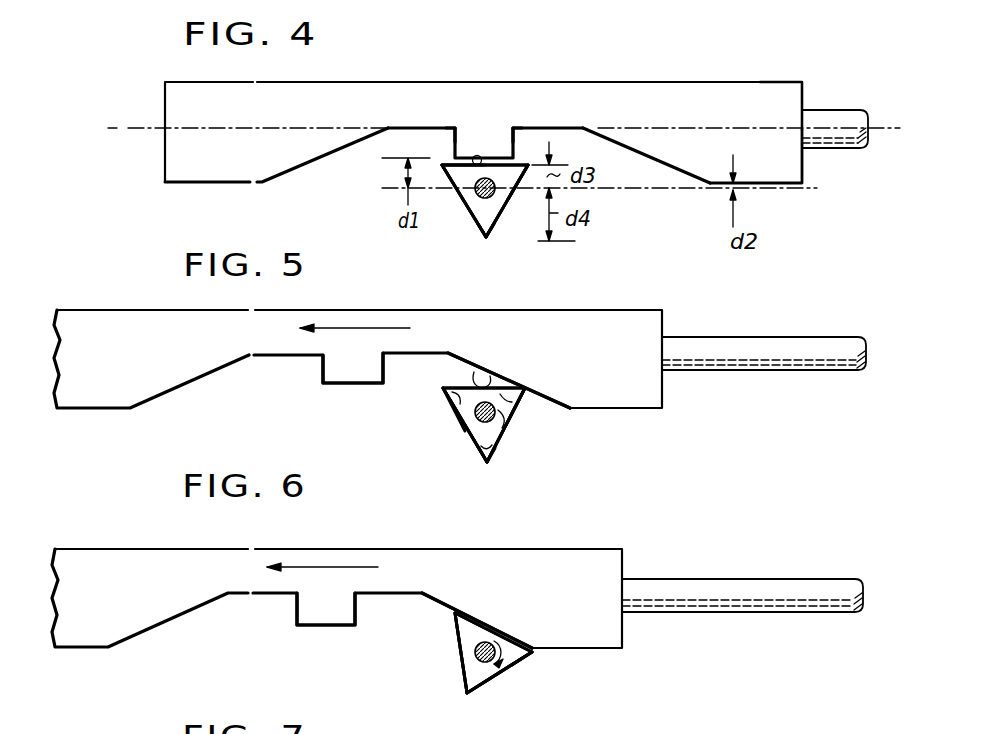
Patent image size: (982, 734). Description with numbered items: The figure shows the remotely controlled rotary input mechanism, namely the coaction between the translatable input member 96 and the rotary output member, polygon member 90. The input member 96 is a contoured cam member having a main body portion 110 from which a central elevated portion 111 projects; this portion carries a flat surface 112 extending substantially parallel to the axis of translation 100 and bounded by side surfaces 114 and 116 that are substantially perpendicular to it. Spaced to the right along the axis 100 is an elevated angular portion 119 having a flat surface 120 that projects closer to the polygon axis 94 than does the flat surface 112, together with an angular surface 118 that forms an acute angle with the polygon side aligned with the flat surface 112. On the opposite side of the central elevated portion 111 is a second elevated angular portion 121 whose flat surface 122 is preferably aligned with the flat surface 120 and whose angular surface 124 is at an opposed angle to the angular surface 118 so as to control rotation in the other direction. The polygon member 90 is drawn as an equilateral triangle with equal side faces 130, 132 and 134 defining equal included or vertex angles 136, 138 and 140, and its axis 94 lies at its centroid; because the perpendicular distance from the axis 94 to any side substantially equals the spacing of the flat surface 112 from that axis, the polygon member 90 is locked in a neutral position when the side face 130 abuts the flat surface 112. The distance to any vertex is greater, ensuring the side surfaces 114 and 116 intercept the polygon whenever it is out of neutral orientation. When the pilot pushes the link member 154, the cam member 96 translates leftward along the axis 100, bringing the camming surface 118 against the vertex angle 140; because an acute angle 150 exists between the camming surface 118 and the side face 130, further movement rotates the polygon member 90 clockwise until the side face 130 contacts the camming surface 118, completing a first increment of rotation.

In FIG. 4, the polygon member 90 is at (483, 212).
In FIG. 5, the polygon member 90 is at (477, 430).
In FIG. 6, the polygon member 90 is at (465, 628).
In FIG. 4, the polygon axis 94 is at (476, 190).
In FIG. 5, the polygon axis 94 is at (477, 415).
In FIG. 6, the polygon axis 94 is at (467, 673).
In FIG. 4, the input member 96 is at (665, 82).
In FIG. 5, the input member 96 is at (620, 363).
In FIG. 6, the input member 96 is at (600, 568).
In FIG. 4, the axis of translation 100 is at (150, 128).
In FIG. 4, the main body portion 110 is at (403, 88).
In FIG. 4, the elevated portion 111 is at (480, 156).
In FIG. 4, the flat surface 112 is at (475, 137).
In FIG. 5, the flat surface 112 is at (358, 386).
In FIG. 6, the flat surface 112 is at (318, 627).
In FIG. 4, the side surface 114 is at (527, 130).
In FIG. 4, the side surface 116 is at (449, 128).
In FIG. 4, the angular surface 118 is at (673, 165).
In FIG. 5, the angular surface 118 is at (560, 402).
In FIG. 6, the angular surface 118 is at (437, 602).
In FIG. 4, the elevated angular portion 119 is at (777, 102).
In FIG. 4, the flat surface 120 is at (790, 184).
In FIG. 4, the second elevated angular portion 121 is at (165, 97).
In FIG. 4, the flat surface 122 is at (225, 183).
In FIG. 4, the angular surface 124 is at (302, 166).
In FIG. 4, the side face 130 is at (521, 164).
In FIG. 5, the side face 130 is at (462, 387).
In FIG. 6, the side face 130 is at (493, 628).
In FIG. 4, the side face 132 is at (505, 208).
In FIG. 5, the side face 132 is at (505, 420).
In FIG. 6, the side face 132 is at (484, 682).
In FIG. 4, the side face 134 is at (460, 197).
In FIG. 5, the side face 134 is at (472, 435).
In FIG. 6, the side face 134 is at (465, 665).
In FIG. 4, the included angle 136 is at (487, 240).
In FIG. 5, the included angle 136 is at (480, 464).
In FIG. 4, the included angle 138 is at (443, 165).
In FIG. 5, the included angle 138 is at (453, 406).
In FIG. 4, the included angle 140 is at (517, 173).
In FIG. 5, the included angle 140 is at (512, 400).
In FIG. 6, the included angle 140 is at (524, 652).
In FIG. 5, the acute angle 150 is at (478, 373).
In FIG. 4, the link member 154 is at (847, 120).
In FIG. 5, the link member 154 is at (782, 347).
In FIG. 6, the link member 154 is at (768, 588).